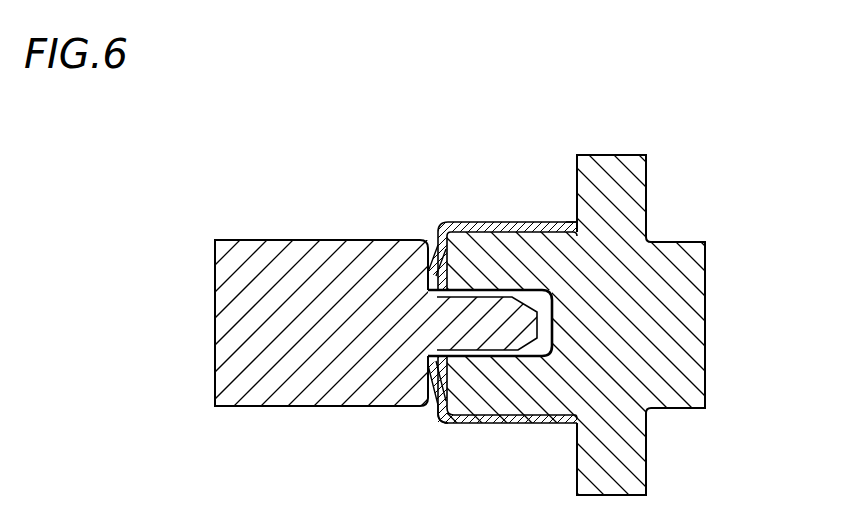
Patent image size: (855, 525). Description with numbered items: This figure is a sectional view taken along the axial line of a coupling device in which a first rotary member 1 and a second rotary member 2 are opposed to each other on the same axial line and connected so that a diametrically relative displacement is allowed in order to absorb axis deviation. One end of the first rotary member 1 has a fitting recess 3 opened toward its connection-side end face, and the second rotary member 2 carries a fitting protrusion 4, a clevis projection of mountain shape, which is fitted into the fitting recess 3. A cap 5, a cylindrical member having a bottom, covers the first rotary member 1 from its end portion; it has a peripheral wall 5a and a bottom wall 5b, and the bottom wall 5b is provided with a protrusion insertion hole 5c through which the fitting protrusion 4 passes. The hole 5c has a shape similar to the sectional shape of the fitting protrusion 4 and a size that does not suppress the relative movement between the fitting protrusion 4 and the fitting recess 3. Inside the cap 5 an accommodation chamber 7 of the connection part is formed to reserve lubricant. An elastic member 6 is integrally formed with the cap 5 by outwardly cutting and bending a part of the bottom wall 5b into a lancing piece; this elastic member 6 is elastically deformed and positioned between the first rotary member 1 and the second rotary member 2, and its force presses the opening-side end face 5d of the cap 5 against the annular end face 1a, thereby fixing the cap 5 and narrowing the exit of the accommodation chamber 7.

The first rotary member 1 is at (576, 262).
The annular end face 1a is at (596, 448).
The second rotary member 2 is at (255, 388).
The fitting recess 3 is at (546, 320).
The fitting protrusion 4 is at (478, 322).
The cap 5 is at (505, 323).
The peripheral wall 5a is at (540, 221).
The bottom wall 5b is at (436, 243).
The protrusion insertion hole 5c is at (428, 355).
The opening-side end face 5d is at (579, 228).
The elastic member 6 is at (432, 397).
The accommodation chamber 7 is at (468, 411).